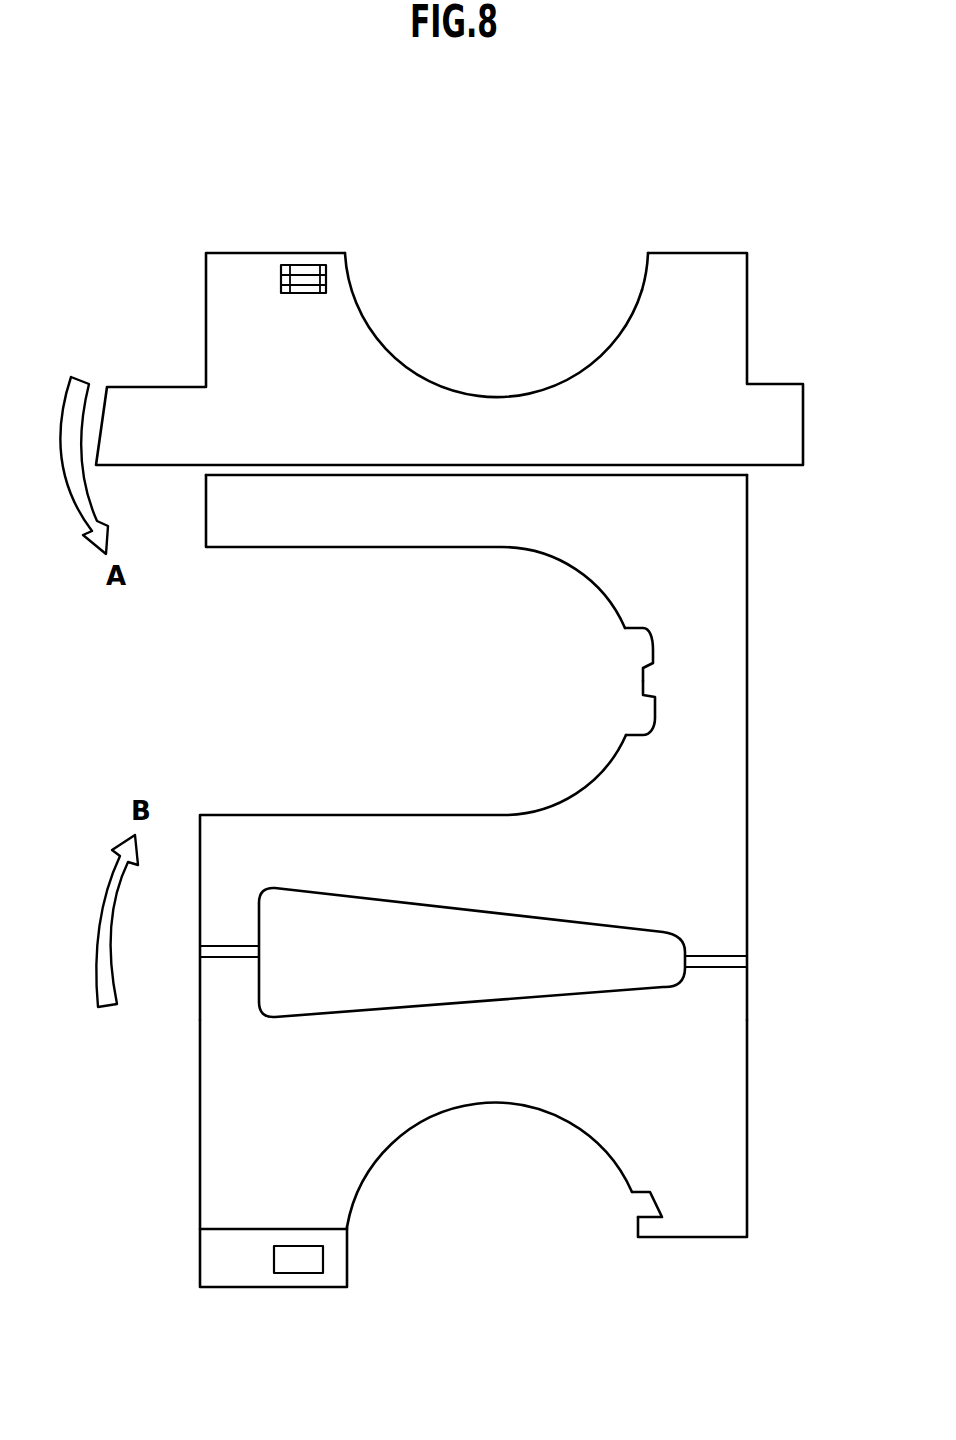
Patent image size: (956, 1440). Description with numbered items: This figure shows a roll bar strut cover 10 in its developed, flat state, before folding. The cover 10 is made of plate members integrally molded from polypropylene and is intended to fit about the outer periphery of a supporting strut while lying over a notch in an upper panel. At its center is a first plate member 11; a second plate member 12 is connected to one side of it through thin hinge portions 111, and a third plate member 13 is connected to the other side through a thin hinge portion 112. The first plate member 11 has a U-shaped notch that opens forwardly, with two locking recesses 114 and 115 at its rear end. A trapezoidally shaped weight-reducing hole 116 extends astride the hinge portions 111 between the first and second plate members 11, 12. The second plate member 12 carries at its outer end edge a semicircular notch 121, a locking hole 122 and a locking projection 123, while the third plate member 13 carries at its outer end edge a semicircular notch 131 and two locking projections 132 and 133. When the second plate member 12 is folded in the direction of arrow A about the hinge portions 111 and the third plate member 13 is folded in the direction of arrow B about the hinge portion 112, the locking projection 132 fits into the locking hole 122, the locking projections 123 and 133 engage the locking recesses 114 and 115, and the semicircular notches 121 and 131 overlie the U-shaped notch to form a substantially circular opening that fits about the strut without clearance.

The cover 10 is at (771, 664).
The first plate member 11 is at (364, 814).
The hinge portions 111 is at (231, 950).
The hinge portion 112 is at (503, 466).
The locking recess 114 is at (647, 722).
The locking recess 115 is at (647, 650).
The weight-reducing hole 116 is at (400, 1007).
The second plate member 12 is at (747, 1091).
The semicircular notch 121 is at (512, 1105).
The locking hole 122 is at (308, 1268).
The locking projection 123 is at (647, 1202).
The third plate member 13 is at (752, 339).
The semicircular notch 131 is at (455, 383).
The locking projection 132 is at (288, 264).
The locking projection 133 is at (648, 290).